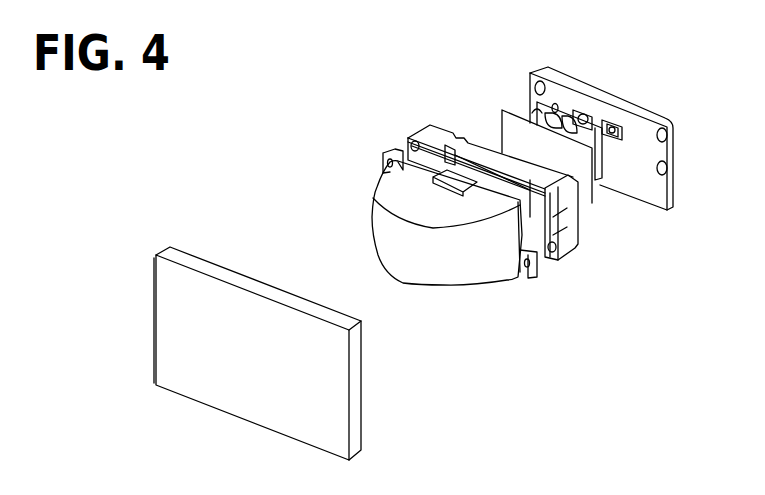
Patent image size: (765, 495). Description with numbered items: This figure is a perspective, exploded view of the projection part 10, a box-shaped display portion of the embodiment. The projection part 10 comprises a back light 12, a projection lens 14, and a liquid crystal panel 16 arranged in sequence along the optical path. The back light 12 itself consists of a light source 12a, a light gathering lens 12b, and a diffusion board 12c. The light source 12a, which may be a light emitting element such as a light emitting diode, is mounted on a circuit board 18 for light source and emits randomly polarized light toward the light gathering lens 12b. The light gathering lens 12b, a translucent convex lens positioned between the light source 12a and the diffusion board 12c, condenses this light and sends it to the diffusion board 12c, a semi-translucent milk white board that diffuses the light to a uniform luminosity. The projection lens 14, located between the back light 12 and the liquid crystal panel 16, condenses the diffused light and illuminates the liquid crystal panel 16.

The projection part 10 is at (342, 142).
The back light 12 is at (725, 250).
The light source 12a is at (622, 136).
The light gathering lens 12b is at (602, 173).
The diffusion board 12c is at (582, 193).
The projection lens 14 is at (448, 273).
The liquid crystal panel 16 is at (358, 405).
The circuit board for light source 18 is at (662, 152).